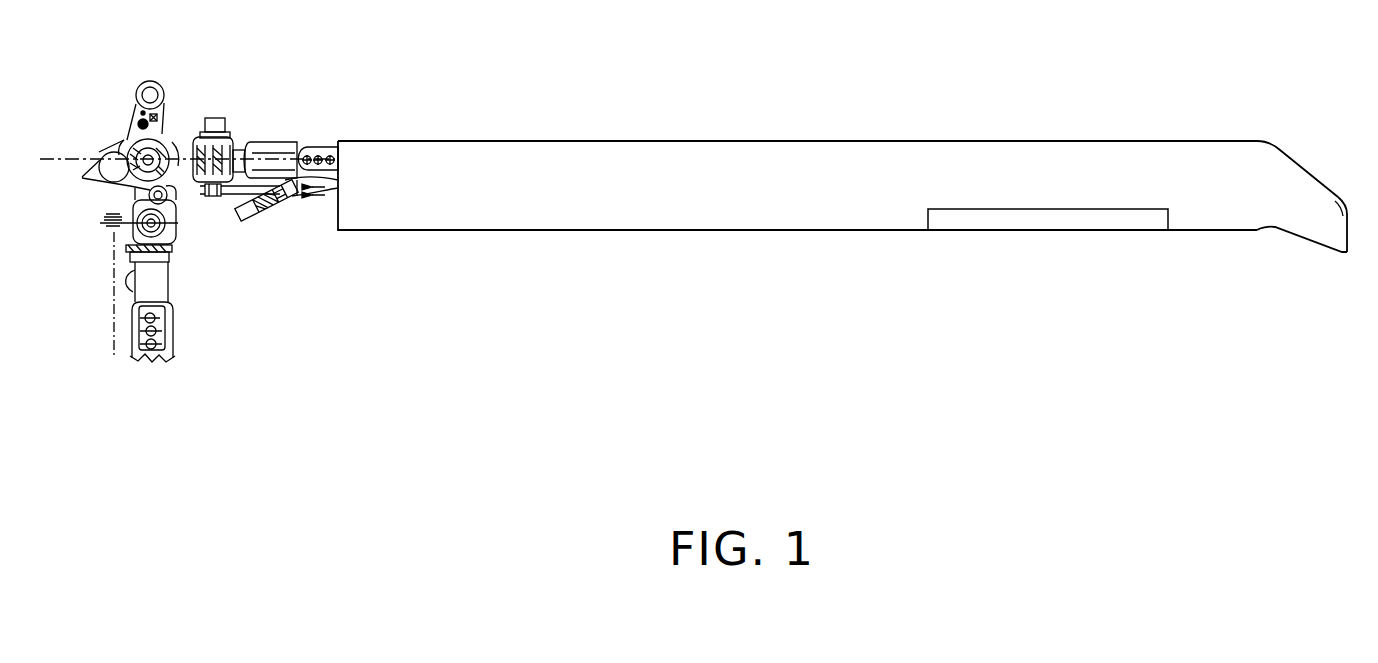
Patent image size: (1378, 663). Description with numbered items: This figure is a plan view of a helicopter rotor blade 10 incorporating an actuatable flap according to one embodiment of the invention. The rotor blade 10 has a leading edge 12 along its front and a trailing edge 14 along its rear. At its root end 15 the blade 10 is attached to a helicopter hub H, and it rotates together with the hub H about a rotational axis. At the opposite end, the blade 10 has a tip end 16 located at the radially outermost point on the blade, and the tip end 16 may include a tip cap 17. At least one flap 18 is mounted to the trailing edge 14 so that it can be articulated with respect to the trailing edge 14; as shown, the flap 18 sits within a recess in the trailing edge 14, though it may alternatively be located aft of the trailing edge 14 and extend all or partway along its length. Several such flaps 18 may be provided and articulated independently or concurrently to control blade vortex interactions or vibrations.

The rotor blade 10 is at (852, 224).
The leading edge 12 is at (543, 141).
The trailing edge 14 is at (678, 203).
The root end 15 is at (308, 147).
The tip end 16 is at (1272, 175).
The tip cap 17 is at (1308, 195).
The flap 18 is at (1032, 219).
The helicopter hub H is at (192, 93).